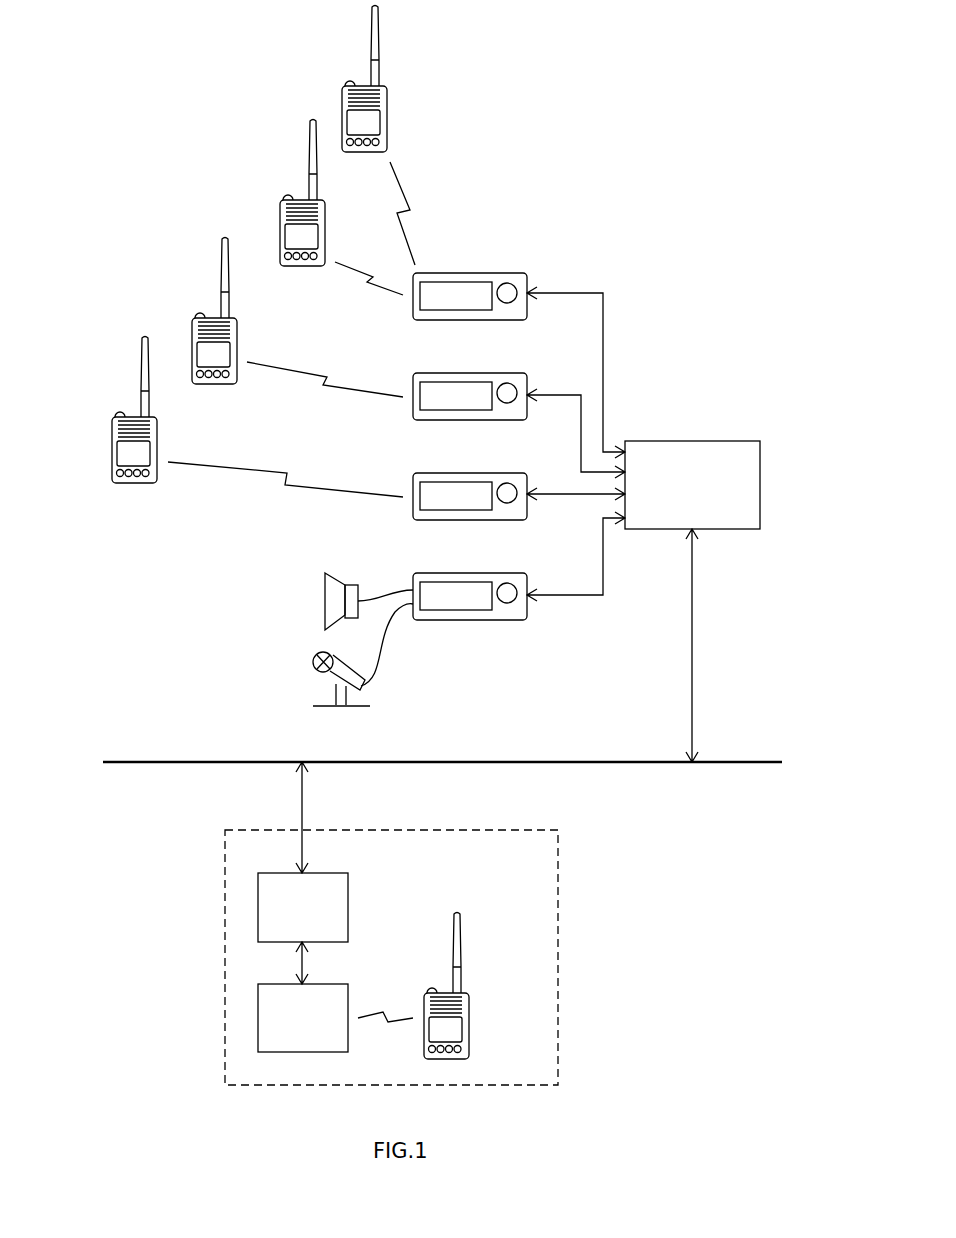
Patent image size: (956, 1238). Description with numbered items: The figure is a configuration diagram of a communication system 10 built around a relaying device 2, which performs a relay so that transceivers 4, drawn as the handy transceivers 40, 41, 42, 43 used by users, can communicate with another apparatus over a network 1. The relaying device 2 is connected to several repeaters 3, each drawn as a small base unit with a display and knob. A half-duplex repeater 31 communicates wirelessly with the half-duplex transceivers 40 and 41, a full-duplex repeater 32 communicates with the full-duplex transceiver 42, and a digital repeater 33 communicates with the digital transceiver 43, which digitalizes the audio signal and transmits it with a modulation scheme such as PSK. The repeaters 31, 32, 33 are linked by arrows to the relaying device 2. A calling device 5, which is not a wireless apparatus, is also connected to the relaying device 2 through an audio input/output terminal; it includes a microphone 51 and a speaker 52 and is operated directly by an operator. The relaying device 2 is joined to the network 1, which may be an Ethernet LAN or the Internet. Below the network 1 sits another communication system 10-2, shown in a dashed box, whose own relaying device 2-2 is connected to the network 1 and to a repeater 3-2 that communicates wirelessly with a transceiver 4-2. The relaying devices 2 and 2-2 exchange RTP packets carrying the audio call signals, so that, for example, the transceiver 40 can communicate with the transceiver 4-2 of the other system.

The communication system 10 is at (667, 250).
The another communication system 10-2 is at (527, 830).
The network 1 is at (492, 762).
The relaying device 2 is at (760, 442).
The relaying device 2-2 is at (348, 874).
The repeaters 3 is at (519, 386).
The half-duplex repeater 31 is at (527, 275).
The full-duplex repeater 32 is at (527, 375).
The digital repeater 33 is at (527, 475).
The repeater 3-2 is at (348, 985).
The transceivers 4 is at (218, 245).
The transceiver 40 is at (341, 92).
The transceiver 41 is at (279, 206).
The transceiver 42 is at (191, 324).
The digital transceiver 43 is at (111, 424).
The transceiver 4-2 is at (471, 996).
The calling device 5 is at (527, 575).
The microphone 51 is at (312, 660).
The speaker 52 is at (324, 580).